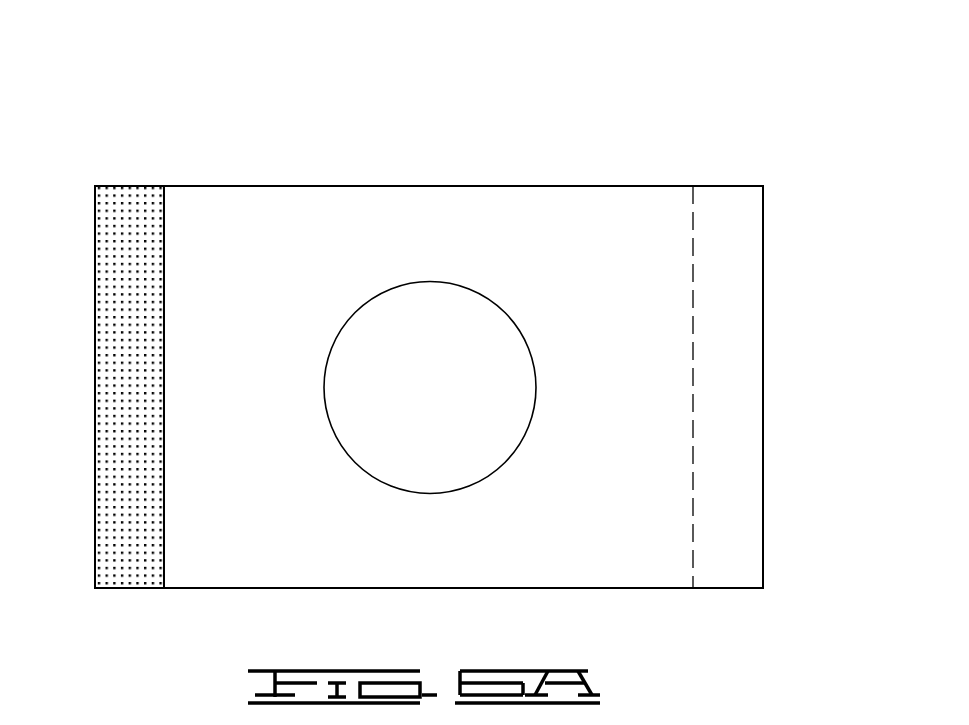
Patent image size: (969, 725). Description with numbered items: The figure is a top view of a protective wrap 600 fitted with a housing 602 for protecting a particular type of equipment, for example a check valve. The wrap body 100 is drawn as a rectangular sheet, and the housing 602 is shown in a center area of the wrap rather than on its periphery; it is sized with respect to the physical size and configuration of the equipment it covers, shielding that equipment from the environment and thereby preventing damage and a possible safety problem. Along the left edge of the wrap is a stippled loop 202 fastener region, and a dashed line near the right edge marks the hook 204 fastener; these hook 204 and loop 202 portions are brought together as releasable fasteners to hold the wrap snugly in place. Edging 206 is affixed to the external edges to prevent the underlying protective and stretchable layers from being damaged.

The protective wrap 600 is at (731, 152).
The substrate sheet 100 is at (575, 535).
The loop fastener 202 is at (123, 260).
The hook fastener 204 is at (723, 315).
The edging 206 is at (95, 457).
The housing 602 is at (388, 318).